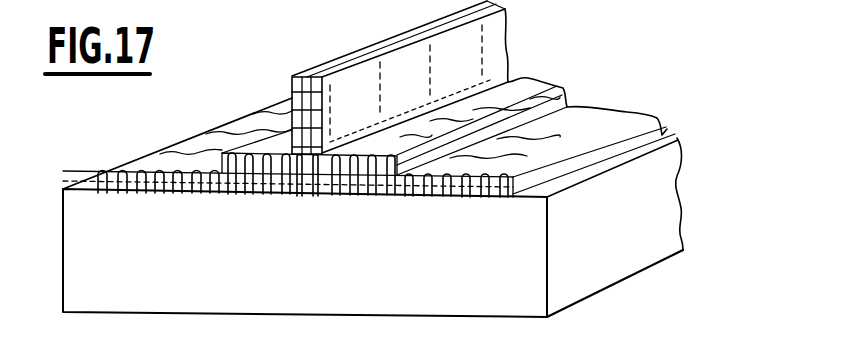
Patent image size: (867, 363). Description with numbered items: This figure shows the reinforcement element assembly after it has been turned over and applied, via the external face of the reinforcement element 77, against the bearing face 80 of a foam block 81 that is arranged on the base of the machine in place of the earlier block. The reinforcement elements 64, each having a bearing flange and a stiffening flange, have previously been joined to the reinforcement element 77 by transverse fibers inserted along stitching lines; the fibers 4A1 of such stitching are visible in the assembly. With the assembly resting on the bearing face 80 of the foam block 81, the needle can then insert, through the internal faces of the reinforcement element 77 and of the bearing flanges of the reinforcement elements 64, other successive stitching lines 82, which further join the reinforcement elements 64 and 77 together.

The reinforcement element 64 is at (531, 85).
The stitching lines 82 is at (530, 152).
The reinforcement element 77 is at (662, 136).
The bearing face 80 is at (662, 136).
The foam block 81 is at (650, 232).
The leads / bumps 4A1 is at (315, 198).